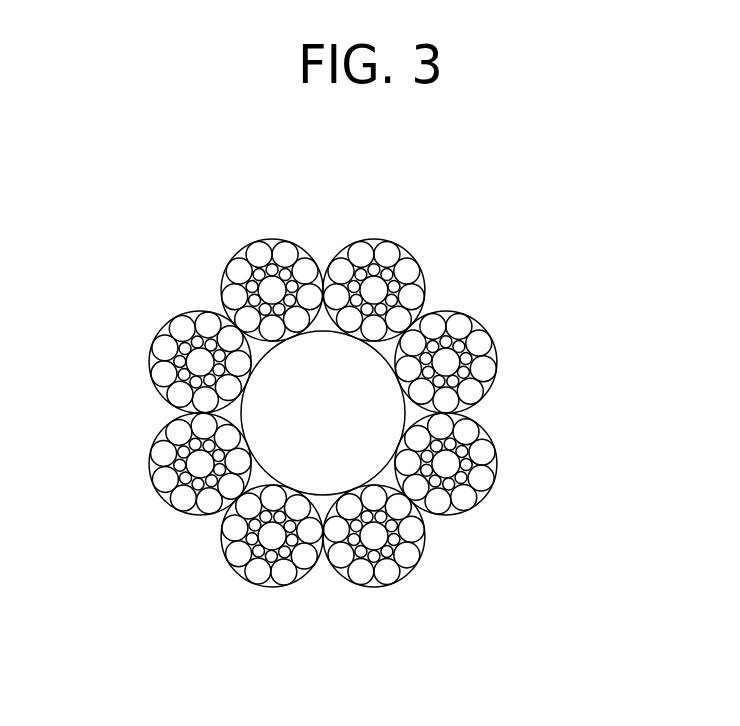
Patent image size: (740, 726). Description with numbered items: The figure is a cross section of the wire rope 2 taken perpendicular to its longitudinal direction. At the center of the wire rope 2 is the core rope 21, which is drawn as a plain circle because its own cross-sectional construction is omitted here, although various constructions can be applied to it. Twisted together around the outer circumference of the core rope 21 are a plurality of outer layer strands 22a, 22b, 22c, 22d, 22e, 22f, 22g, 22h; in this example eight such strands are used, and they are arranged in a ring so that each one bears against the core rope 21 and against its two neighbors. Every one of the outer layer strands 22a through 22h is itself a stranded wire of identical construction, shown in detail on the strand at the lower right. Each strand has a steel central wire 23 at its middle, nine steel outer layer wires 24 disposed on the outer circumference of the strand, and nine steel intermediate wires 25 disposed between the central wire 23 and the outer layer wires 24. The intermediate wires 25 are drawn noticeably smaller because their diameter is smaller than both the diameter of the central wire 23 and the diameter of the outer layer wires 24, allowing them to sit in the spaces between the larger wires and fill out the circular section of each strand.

The wire rope 2 is at (467, 312).
The core rope 21 is at (325, 377).
The outer layer strand 22a is at (165, 328).
The outer layer strand 22b is at (268, 240).
The outer layer strand 22c is at (383, 240).
The outer layer strand 22d is at (488, 332).
The outer layer strand 22e is at (497, 463).
The outer layer strand 22f is at (373, 587).
The outer layer strand 22g is at (238, 570).
The outer layer strand 22h is at (152, 466).
The central wire 23 is at (375, 535).
The outer layer wire 24 is at (408, 550).
The intermediate wire 25 is at (355, 540).